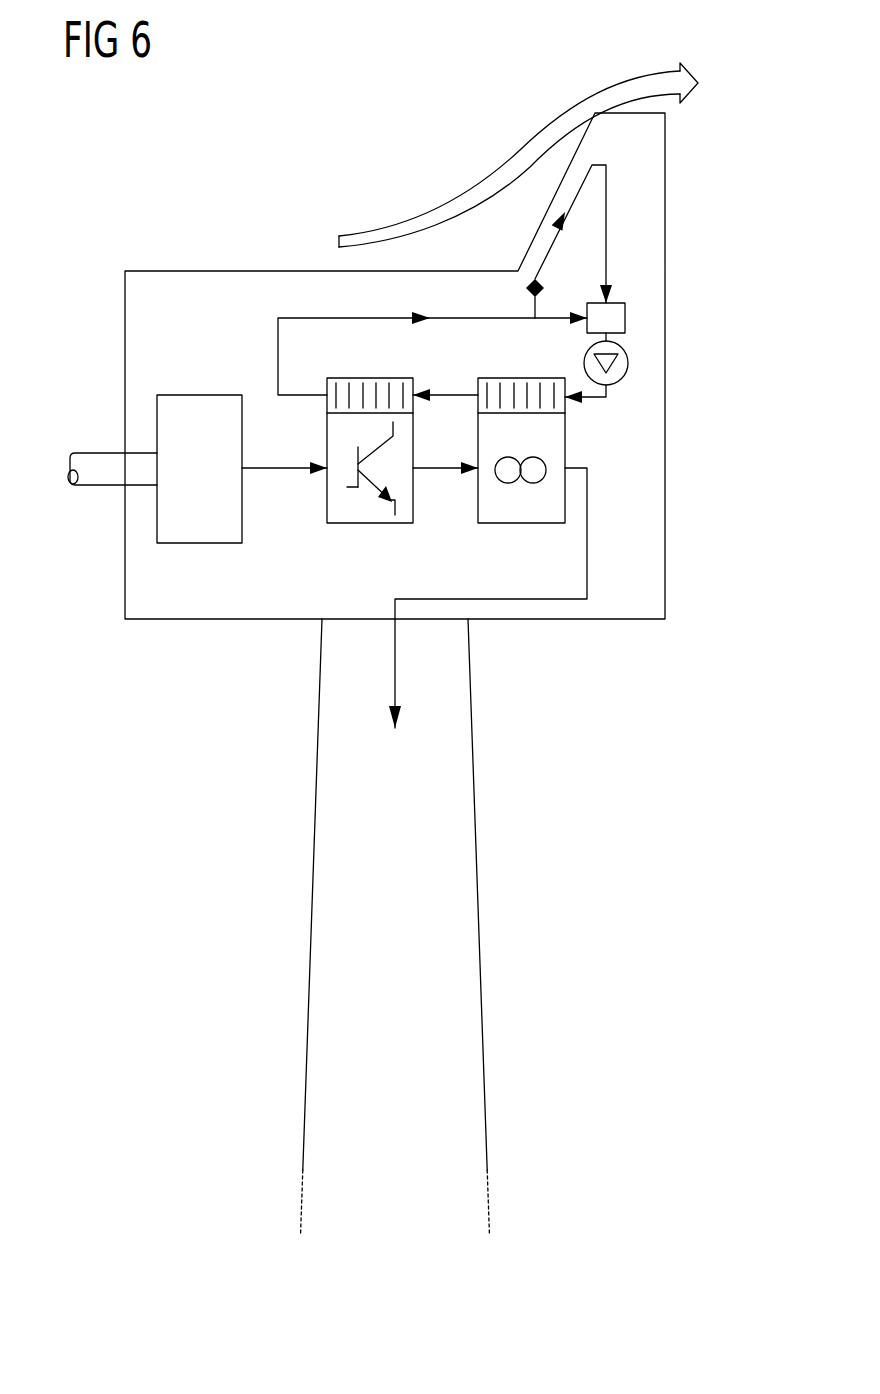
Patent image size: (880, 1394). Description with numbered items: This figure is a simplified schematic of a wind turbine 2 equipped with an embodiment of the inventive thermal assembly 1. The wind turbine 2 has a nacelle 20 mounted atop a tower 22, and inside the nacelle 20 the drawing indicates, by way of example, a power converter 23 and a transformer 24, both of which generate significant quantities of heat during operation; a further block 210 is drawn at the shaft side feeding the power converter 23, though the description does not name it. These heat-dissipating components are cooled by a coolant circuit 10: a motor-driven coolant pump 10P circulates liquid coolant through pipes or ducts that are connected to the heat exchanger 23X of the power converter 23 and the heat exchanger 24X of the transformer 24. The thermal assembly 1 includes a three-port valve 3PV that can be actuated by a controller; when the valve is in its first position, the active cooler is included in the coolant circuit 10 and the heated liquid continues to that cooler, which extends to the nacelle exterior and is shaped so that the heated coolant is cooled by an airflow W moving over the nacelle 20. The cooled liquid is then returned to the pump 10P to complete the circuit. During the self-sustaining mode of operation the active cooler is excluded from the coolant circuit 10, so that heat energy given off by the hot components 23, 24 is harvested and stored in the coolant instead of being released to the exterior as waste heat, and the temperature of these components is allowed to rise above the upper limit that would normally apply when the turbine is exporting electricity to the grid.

The thermal assembly 1 is at (485, 446).
The wind turbine 2 is at (427, 673).
The coolant circuit 10 is at (503, 284).
The coolant pump 10P is at (628, 363).
The three-port valve 3PV is at (625, 318).
The nacelle 20 is at (665, 462).
The tower 22 is at (475, 935).
The power converter 23 is at (360, 484).
The heat exchanger 23X is at (325, 402).
The transformer 24 is at (514, 553).
The heat exchanger 24X is at (565, 404).
The generator 210 is at (93, 448).
The airflow W is at (497, 178).